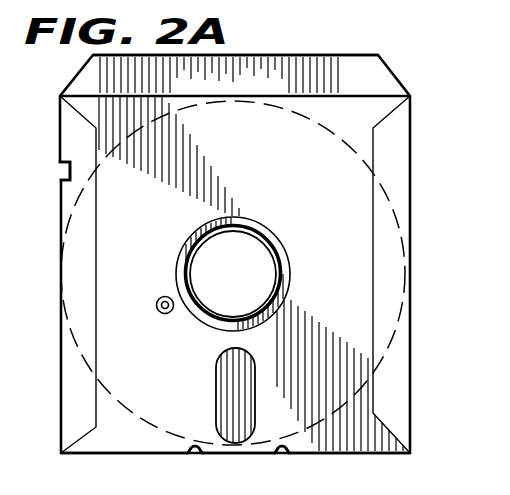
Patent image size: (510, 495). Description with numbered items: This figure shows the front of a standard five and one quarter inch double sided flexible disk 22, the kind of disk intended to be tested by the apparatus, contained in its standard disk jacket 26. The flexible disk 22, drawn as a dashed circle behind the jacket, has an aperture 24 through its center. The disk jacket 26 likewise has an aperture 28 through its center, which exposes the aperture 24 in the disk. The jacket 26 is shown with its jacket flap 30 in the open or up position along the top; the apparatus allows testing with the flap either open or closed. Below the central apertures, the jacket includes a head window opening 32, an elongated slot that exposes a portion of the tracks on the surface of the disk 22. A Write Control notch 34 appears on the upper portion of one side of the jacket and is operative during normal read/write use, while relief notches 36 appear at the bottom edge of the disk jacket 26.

The flexible disk 22 is at (398, 161).
The aperture 24 is at (232, 228).
The disk jacket 26 is at (412, 424).
The aperture 28 is at (271, 233).
The jacket flap 30 is at (400, 75).
The head window opening 32 is at (249, 375).
The Write Control notch 34 is at (61, 170).
The relief notches 36 is at (193, 448).